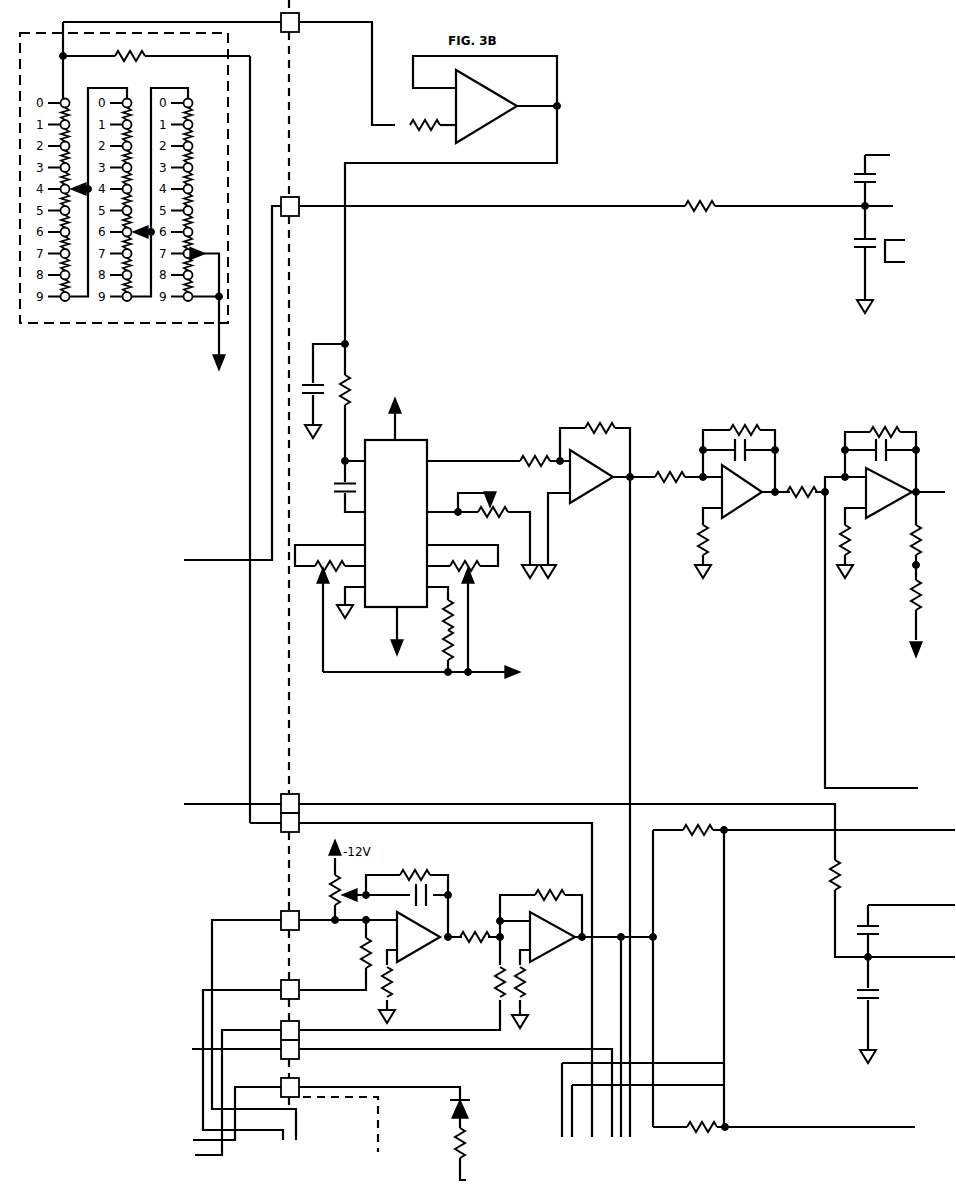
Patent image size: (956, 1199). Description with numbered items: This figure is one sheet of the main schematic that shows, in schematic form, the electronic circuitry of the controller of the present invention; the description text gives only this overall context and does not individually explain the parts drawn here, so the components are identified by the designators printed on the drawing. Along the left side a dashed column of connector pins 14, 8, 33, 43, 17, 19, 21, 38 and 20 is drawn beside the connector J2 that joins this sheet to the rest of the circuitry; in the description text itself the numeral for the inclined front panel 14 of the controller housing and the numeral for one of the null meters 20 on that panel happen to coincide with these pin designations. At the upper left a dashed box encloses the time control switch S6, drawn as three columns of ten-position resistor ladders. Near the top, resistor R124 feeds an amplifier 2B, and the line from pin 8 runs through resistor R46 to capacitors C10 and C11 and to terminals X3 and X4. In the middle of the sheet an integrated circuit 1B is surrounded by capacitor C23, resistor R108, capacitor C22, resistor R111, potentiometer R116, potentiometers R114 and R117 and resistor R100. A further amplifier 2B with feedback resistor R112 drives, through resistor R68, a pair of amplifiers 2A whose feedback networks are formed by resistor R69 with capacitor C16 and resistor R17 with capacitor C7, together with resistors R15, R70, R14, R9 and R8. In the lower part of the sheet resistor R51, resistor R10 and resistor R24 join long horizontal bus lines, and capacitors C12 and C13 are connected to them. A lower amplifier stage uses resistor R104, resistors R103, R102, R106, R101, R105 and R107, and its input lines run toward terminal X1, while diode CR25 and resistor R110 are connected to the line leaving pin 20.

The time control switch S6 is at (135, 422).
The inclined front panel 14 is at (229, 69).
The connector J2 is at (312, 14).
The resistor 8.2K R124 is at (430, 129).
The operational amplifier 2B is at (479, 509).
The connector pin 8 is at (538, 378).
The resistor 1K R46 is at (700, 210).
The capacitor 220pF C10 is at (849, 182).
The capacitor .1 C11 is at (853, 259).
The terminal X3 is at (904, 249).
The terminal X4 is at (915, 270).
The capacitor C23 is at (375, 623).
The resistor 10K R108 is at (362, 404).
The capacitor 220pF C22 is at (331, 485).
The 8048 integrated circuit 1B is at (401, 527).
The resistor 10K R111 is at (498, 460).
The potentiometer R116 is at (420, 706).
The potentiometer 2K R114 is at (330, 608).
The potentiometer 2K R117 is at (462, 608).
The resistor 620K R100 is at (440, 634).
The resistor 10K R112 is at (596, 773).
The resistor 4.7K R68 is at (667, 479).
The operational amplifier 2A is at (833, 491).
The resistor 10K R69 is at (739, 451).
The capacitor C16 is at (739, 450).
The resistor 7.5K R15 is at (795, 493).
The resistor 8.2K R70 is at (717, 543).
The resistor 100K R17 is at (872, 598).
The capacitor C7 is at (880, 450).
The resistor 2.4K R14 is at (860, 543).
The resistor 750 R9 is at (919, 536).
The resistor 30K R8 is at (897, 620).
The connector pin 33 is at (509, 827).
The connector pin 43 is at (421, 975).
The resistor 1K R51 is at (880, 908).
The resistor 2.4K R10 is at (804, 969).
The resistor 2.4K R24 is at (784, 1129).
The capacitor 220pF C12 is at (906, 932).
The capacitor C13 is at (854, 1010).
The resistor 2.4K R104 is at (407, 894).
The connector pin 17 is at (304, 1025).
The resistor 22K R103 is at (335, 955).
The connector pin 19 is at (251, 1060).
The resistor 5.1K R102 is at (404, 986).
The connector pin 21 is at (347, 1077).
The terminal X1 is at (177, 1157).
The resistor 2.2K R106 is at (482, 970).
The resistor 10K R101 is at (472, 940).
The resistor 10K R105 is at (539, 906).
The resistor 5.1K R107 is at (536, 989).
The connector pin 38 is at (402, 1088).
The null meter 20 is at (326, 1115).
The diode 1N4001 CR25 is at (447, 1106).
The resistor 39 R110 is at (445, 1154).